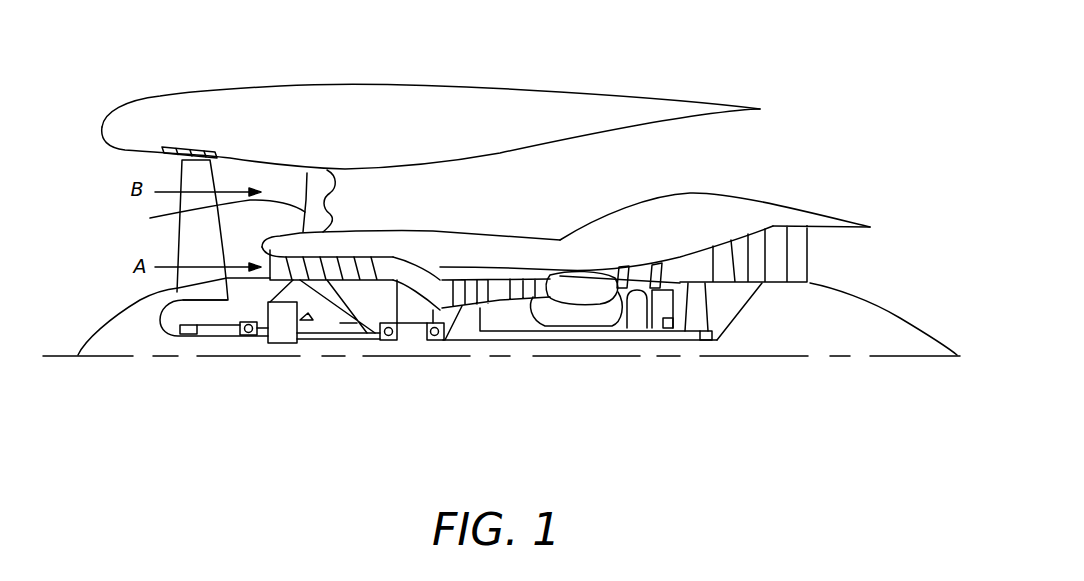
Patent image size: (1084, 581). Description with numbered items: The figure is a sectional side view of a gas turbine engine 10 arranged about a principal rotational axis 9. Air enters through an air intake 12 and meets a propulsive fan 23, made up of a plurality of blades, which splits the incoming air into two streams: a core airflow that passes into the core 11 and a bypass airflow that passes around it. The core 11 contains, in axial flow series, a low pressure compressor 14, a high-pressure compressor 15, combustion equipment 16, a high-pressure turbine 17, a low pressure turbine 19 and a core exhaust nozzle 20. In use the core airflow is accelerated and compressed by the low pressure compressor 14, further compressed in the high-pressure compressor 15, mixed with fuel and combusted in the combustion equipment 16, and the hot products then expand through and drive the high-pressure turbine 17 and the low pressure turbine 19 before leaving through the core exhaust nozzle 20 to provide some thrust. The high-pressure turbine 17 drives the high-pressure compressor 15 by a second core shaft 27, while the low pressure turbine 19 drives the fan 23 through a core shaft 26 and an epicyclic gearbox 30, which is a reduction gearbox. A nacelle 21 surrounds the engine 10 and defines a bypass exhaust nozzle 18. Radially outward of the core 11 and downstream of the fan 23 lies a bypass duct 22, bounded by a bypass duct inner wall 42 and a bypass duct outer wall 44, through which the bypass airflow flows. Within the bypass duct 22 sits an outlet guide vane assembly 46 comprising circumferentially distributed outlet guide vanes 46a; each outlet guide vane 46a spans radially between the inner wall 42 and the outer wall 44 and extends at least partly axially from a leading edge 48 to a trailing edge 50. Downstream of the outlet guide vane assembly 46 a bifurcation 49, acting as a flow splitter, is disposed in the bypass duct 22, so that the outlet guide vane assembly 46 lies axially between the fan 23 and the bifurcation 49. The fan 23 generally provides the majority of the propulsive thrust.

The principal rotational axis 9 is at (757, 360).
The gas turbine engine 10 is at (175, 95).
The core 11 is at (546, 244).
The air intake 12 is at (122, 169).
The low pressure compressor 14 is at (338, 225).
The high-pressure compressor 15 is at (503, 282).
The combustion equipment 16 is at (575, 292).
The high-pressure turbine 17 is at (636, 282).
The bypass exhaust nozzle 18 is at (762, 150).
The low pressure turbine 19 is at (775, 245).
The core exhaust nozzle 20 is at (848, 254).
The nacelle 21 is at (410, 95).
The bypass duct 22 is at (677, 163).
The propulsive fan 23 is at (182, 243).
The core shaft 26 is at (490, 345).
The second core shaft 27 is at (533, 332).
The epicyclic gearbox 30 is at (279, 337).
The bypass duct inner wall 42 is at (585, 225).
The bypass duct outer wall 44 is at (582, 127).
The outlet guide vane assembly 46 is at (311, 180).
The outlet guide vane 46a is at (352, 257).
The leading edge 48 is at (150, 218).
The bifurcation 49 is at (425, 193).
The trailing edge 50 is at (327, 265).